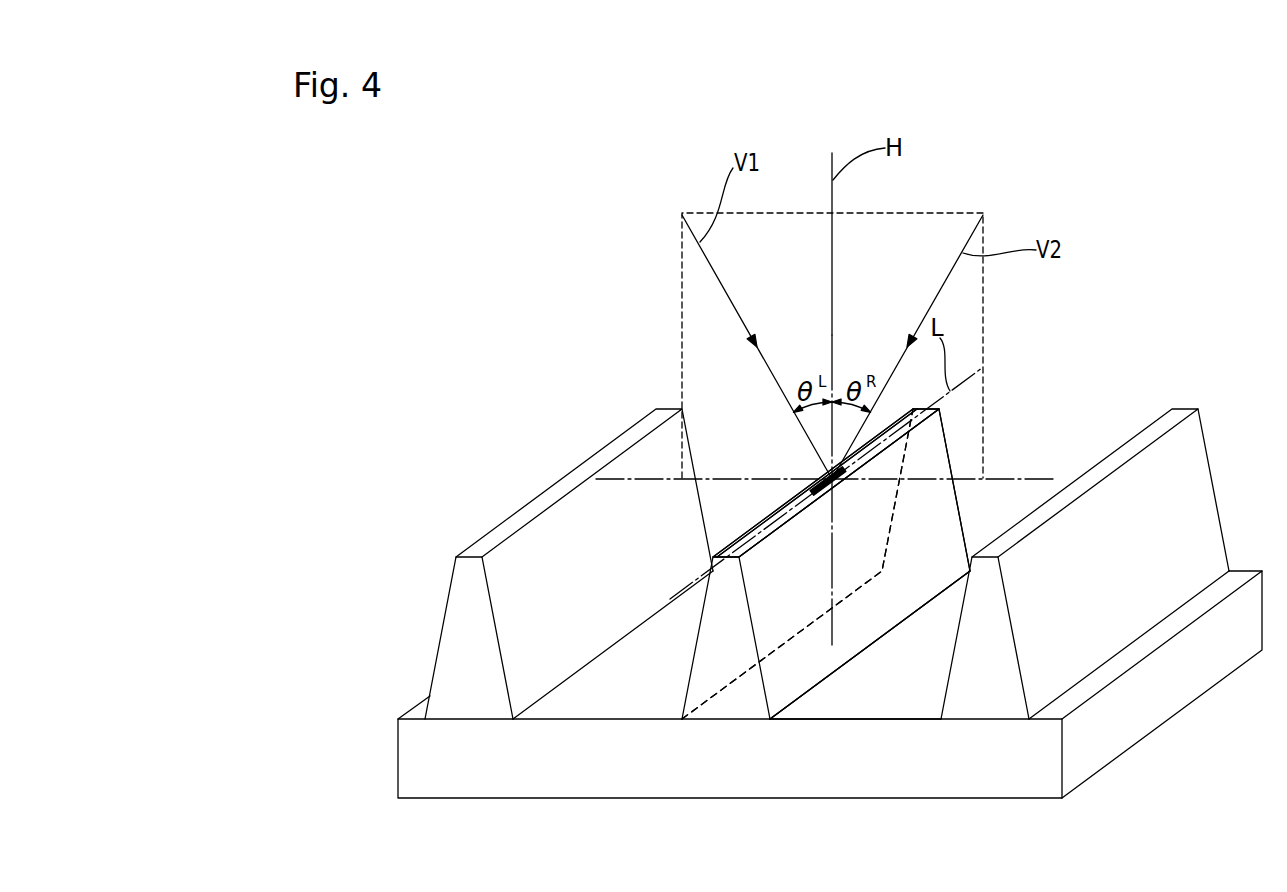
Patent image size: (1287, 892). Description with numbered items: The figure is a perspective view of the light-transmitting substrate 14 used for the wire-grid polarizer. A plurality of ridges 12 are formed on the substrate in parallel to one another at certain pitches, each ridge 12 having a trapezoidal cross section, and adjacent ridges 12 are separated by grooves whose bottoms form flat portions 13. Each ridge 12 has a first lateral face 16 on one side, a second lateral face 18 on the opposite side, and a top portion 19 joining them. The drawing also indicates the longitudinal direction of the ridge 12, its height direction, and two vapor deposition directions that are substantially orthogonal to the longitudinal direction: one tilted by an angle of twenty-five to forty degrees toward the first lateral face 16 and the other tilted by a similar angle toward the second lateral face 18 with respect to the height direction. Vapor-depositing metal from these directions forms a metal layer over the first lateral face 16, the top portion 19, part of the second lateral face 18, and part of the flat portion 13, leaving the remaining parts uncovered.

The ridge 12 is at (752, 690).
The flat portion 13 is at (832, 720).
The light-transmitting substrate 14 is at (735, 785).
The first lateral face 16 is at (720, 645).
The second lateral face 18 is at (765, 640).
The top portion 19 is at (743, 533).